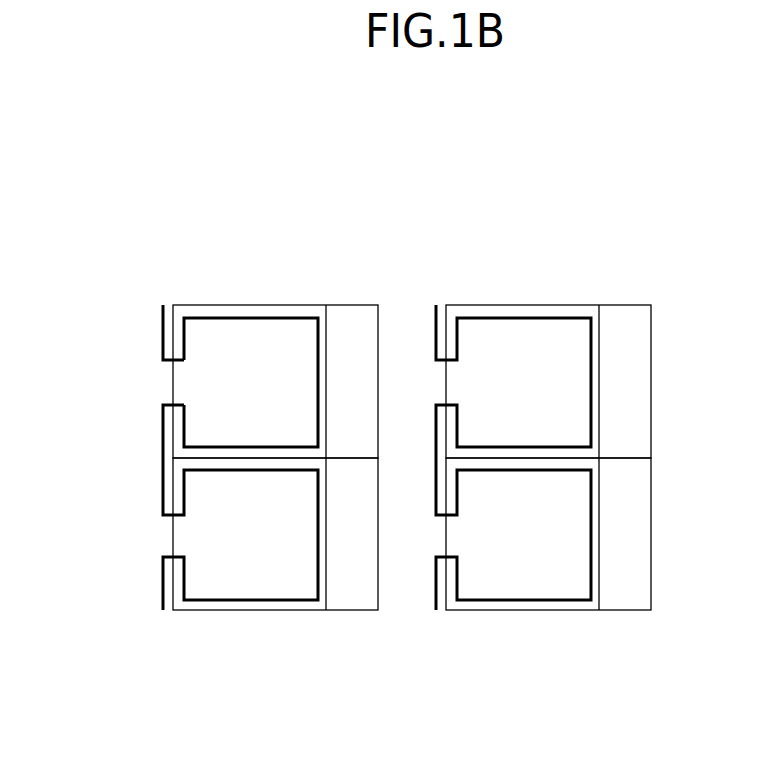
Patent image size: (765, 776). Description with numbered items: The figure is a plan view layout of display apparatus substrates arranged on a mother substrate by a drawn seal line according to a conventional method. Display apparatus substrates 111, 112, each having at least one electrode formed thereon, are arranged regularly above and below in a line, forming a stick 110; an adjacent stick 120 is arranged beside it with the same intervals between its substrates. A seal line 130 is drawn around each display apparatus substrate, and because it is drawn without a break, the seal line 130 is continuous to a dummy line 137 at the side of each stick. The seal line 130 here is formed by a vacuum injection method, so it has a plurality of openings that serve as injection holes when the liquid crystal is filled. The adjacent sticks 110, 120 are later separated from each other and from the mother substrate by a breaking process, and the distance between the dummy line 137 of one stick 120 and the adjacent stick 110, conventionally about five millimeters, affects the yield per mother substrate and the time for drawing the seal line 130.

The stick 110 is at (288, 281).
The stick 120 is at (562, 279).
The display apparatus substrate 111 is at (217, 384).
The display apparatus substrate 112 is at (218, 535).
The dummy line 137 is at (163, 333).
The seal line 130 is at (252, 602).